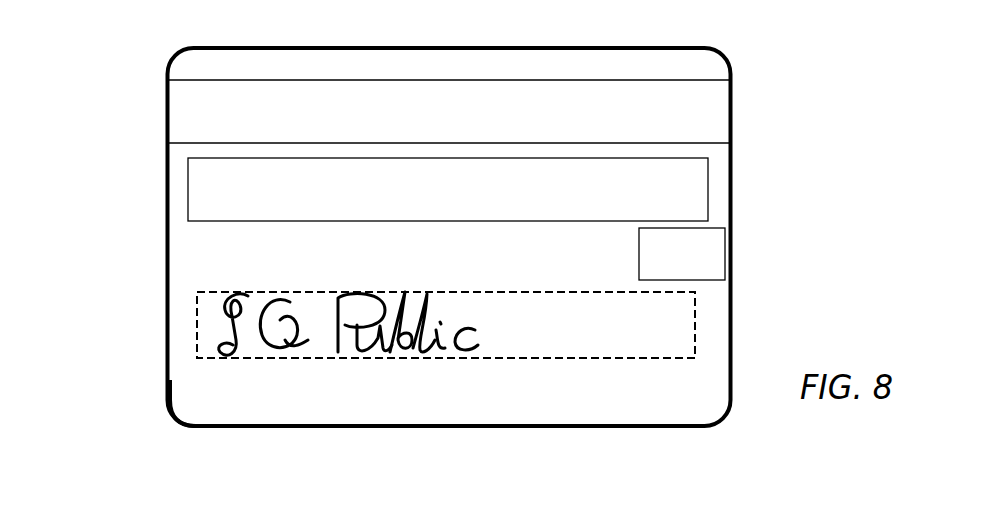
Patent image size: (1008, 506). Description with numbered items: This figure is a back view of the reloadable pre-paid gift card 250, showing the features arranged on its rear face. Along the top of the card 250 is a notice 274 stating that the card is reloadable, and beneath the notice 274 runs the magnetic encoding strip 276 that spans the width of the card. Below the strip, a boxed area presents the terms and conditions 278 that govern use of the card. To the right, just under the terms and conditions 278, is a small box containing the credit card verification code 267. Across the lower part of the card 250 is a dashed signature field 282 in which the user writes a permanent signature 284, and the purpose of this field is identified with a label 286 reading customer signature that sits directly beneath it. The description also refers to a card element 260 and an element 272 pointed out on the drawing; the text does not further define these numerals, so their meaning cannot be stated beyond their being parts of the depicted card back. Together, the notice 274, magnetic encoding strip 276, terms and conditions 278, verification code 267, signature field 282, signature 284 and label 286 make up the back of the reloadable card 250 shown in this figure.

The gift card 250 is at (160, 113).
The credit card 260 is at (432, 0).
The credit card verification code 267 is at (716, 249).
The card body 272 is at (192, 407).
The notice 274 is at (576, 65).
The magnetic encoding strip 276 is at (221, 104).
The terms and conditions 278 is at (188, 195).
The signature field 282 is at (196, 297).
The permanent signature 284 is at (220, 335).
The label 286 is at (466, 388).